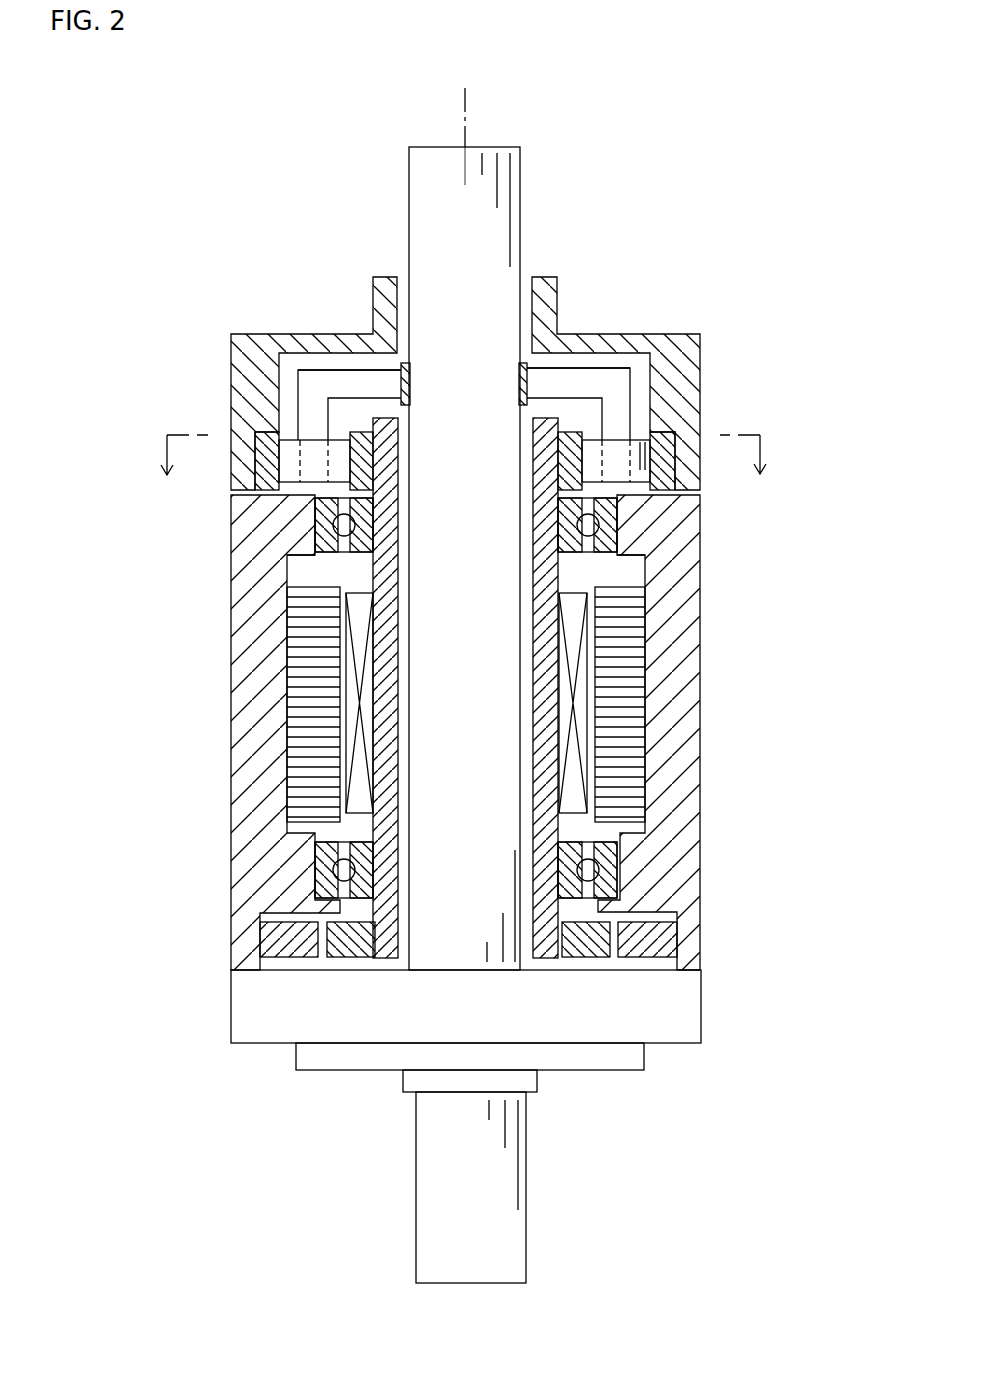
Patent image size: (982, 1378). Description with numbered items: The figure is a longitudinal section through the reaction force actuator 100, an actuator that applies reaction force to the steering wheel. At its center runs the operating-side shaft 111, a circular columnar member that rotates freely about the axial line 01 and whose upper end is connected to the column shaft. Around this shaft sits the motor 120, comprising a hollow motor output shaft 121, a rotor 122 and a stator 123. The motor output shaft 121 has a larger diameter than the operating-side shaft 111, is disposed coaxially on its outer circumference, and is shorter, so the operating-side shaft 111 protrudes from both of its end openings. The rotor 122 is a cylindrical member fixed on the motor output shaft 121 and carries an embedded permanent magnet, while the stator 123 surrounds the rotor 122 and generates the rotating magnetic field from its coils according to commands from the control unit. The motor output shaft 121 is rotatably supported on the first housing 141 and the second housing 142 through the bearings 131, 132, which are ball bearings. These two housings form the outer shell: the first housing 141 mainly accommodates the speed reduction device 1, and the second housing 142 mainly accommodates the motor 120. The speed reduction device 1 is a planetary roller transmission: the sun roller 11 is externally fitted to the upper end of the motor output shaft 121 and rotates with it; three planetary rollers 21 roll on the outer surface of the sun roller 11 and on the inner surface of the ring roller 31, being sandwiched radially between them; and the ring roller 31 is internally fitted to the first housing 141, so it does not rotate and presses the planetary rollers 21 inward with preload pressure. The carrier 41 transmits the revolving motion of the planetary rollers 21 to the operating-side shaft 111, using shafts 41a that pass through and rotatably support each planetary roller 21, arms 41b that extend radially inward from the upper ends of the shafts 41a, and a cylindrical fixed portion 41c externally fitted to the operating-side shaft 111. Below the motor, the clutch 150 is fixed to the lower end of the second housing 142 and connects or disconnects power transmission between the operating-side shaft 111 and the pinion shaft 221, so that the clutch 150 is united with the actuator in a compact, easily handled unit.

The speed reduction device 1 is at (219, 298).
The axial line 01 is at (462, 123).
The reaction force actuator 100 is at (652, 198).
The sun roller 11 is at (680, 332).
The operating-side shaft 111 is at (408, 207).
The carrier 41 is at (465, 352).
The shaft 41a is at (310, 407).
The arm 41b is at (367, 380).
The fixed portion 41c is at (530, 381).
The planetary roller 21 is at (291, 452).
The ring roller 31 is at (662, 455).
The motor output shaft 121 is at (547, 577).
The rotor 122 is at (572, 647).
The stator 123 is at (632, 720).
The motor 120 is at (536, 688).
The bearing 131 is at (592, 523).
The bearing 132 is at (610, 869).
The first housing 141 is at (223, 467).
The second housing 142 is at (219, 680).
The clutch 150 is at (222, 1010).
The pinion shaft 221 is at (432, 1200).